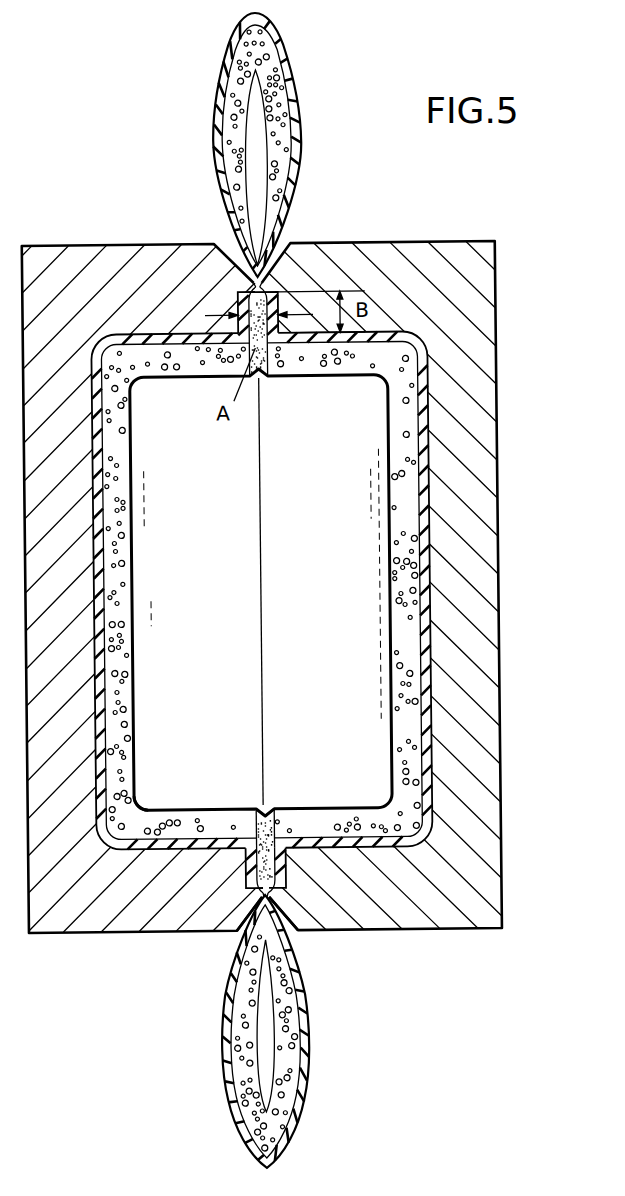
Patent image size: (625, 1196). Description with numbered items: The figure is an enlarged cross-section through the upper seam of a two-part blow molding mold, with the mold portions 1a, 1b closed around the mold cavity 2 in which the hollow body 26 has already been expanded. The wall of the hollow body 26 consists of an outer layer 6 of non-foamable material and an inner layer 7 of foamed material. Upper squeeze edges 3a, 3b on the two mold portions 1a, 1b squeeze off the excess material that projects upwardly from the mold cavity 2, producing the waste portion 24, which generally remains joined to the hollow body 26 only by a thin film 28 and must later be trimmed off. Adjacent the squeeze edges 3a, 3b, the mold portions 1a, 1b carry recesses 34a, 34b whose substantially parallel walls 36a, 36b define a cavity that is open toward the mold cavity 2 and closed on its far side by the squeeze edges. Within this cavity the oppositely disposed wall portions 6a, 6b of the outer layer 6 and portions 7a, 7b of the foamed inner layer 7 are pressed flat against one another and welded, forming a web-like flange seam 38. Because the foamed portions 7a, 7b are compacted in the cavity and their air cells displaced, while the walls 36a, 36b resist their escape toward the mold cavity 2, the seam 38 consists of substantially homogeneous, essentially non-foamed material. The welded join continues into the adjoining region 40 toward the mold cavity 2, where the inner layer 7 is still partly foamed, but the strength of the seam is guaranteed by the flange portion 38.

The mold portion 1a is at (137, 906).
The mold portion 1b is at (403, 900).
The mold cavity 2 is at (311, 686).
The squeeze edge 3a is at (249, 896).
The squeeze edge 3b is at (287, 914).
The outer layer 6 is at (323, 347).
The wall portion of outer layer 6a is at (249, 878).
The wall portion of outer layer 6b is at (280, 860).
The inner layer 7 is at (132, 543).
The portion of foamed layer 7a is at (259, 882).
The portion of foamed layer 7b is at (277, 879).
The waste portion 24 is at (219, 121).
The hollow body 26 is at (181, 803).
The film 28 is at (266, 285).
The recess 34a is at (226, 830).
The recess 34b is at (310, 838).
The wall 36a is at (244, 866).
The wall 36b is at (289, 869).
The welded seam 38 is at (275, 866).
The region 40 is at (257, 826).